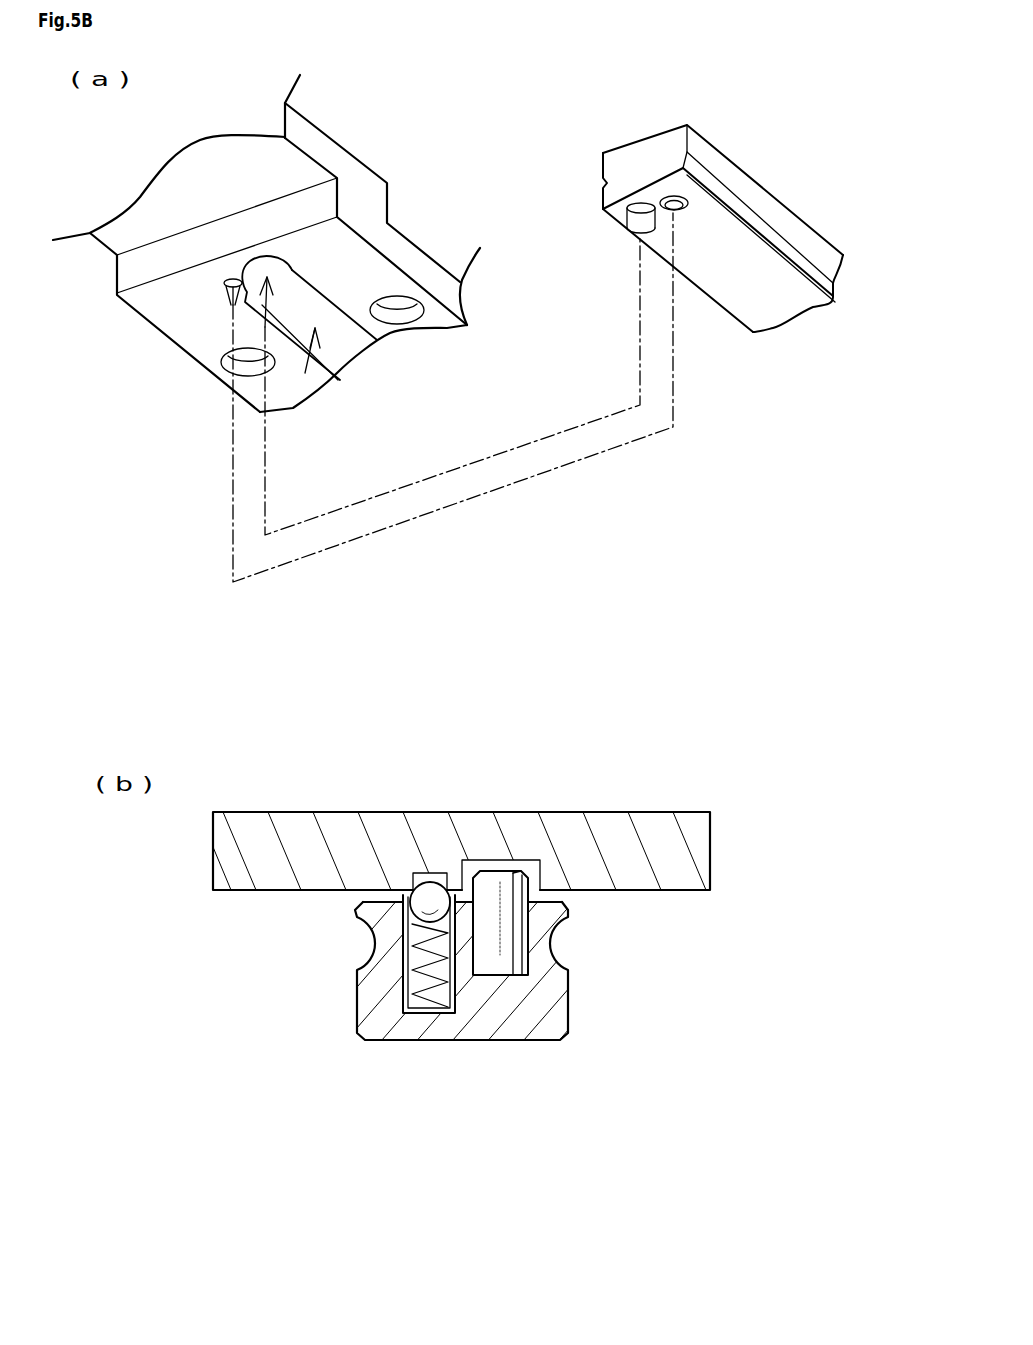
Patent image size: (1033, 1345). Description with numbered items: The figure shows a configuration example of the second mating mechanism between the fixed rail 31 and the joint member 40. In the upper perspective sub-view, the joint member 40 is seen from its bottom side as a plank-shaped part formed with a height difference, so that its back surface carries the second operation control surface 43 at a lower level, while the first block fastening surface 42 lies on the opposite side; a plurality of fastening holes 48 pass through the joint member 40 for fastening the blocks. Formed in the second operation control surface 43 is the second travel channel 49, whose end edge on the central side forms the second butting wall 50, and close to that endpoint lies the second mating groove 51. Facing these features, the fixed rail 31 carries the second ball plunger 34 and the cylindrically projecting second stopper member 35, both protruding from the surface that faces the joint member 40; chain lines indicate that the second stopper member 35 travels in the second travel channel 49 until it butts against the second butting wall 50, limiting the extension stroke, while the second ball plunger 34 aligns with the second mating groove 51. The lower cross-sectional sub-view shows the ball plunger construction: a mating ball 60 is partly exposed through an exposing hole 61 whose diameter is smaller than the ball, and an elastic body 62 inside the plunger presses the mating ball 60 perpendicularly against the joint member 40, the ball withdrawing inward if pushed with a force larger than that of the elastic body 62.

The fixed rail 31 is at (728, 332).
The second ball plunger 34 is at (687, 217).
The second stopper member 35 is at (642, 230).
The joint member 40 is at (308, 795).
The first block fastening surface 42 is at (425, 242).
The second operation control surface 43 is at (315, 328).
The fastening holes 48 is at (225, 368).
The second travel channel 49 is at (350, 342).
The second butting wall 50 is at (290, 270).
The second mating groove 51 is at (228, 288).
The mating ball 60 is at (363, 943).
The exposing hole 61 is at (410, 892).
The elastic body 62 is at (415, 975).